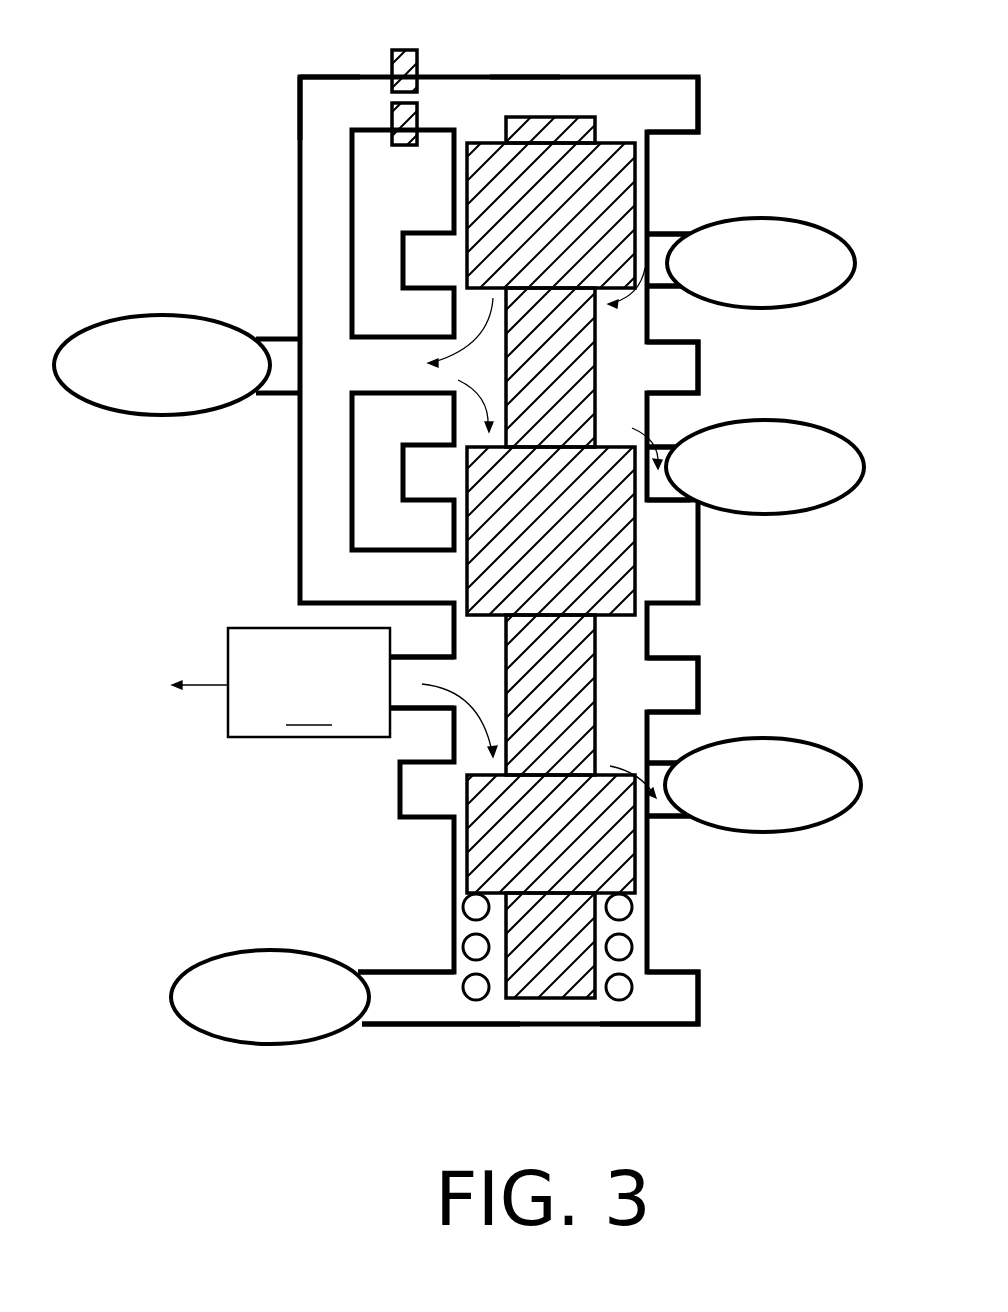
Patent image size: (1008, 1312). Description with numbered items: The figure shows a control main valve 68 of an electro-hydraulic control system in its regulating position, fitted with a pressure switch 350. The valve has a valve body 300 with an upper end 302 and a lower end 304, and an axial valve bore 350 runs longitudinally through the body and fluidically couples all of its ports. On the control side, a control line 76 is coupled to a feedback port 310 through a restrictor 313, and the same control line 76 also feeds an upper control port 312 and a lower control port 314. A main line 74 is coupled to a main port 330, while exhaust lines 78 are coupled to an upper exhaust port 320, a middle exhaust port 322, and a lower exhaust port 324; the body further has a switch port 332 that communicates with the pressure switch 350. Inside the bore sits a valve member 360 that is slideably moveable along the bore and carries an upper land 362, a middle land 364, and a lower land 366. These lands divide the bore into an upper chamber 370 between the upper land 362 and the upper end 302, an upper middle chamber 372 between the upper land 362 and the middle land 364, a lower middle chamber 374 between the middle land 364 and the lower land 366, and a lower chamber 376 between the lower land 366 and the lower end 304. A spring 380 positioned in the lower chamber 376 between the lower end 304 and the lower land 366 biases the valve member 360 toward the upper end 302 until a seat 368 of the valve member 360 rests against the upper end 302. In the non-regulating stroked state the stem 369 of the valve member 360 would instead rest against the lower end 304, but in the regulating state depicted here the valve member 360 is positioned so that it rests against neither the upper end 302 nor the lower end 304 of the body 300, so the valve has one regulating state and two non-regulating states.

The control main valve 68 is at (288, 94).
The main line 74 is at (745, 294).
The control line 76 is at (146, 394).
The exhaust lines 78 is at (749, 497).
The valve body 300 is at (647, 921).
The upper end 302 is at (520, 75).
The lower end 304 is at (468, 1028).
The feedback port 310 is at (432, 95).
The upper control port 312 is at (418, 366).
The restrictor 313 is at (420, 50).
The lower control port 314 is at (418, 578).
The upper exhaust port 320 is at (653, 482).
The middle exhaust port 322 is at (647, 800).
The lower exhaust port 324 is at (403, 1003).
The main port 330 is at (655, 258).
The switch port 332 is at (422, 697).
The pressure switch / axial valve bore 350 is at (542, 1036).
The valve member 360 is at (640, 542).
The upper land 362 is at (620, 208).
The middle land 364 is at (607, 553).
The lower land 366 is at (598, 848).
The seat 368 is at (560, 118).
The stem 369 is at (568, 982).
The upper chamber 370 is at (655, 108).
The upper middle chamber 372 is at (610, 395).
The lower middle chamber 374 is at (615, 680).
The lower chamber 376 is at (640, 1003).
The spring 380 is at (618, 983).